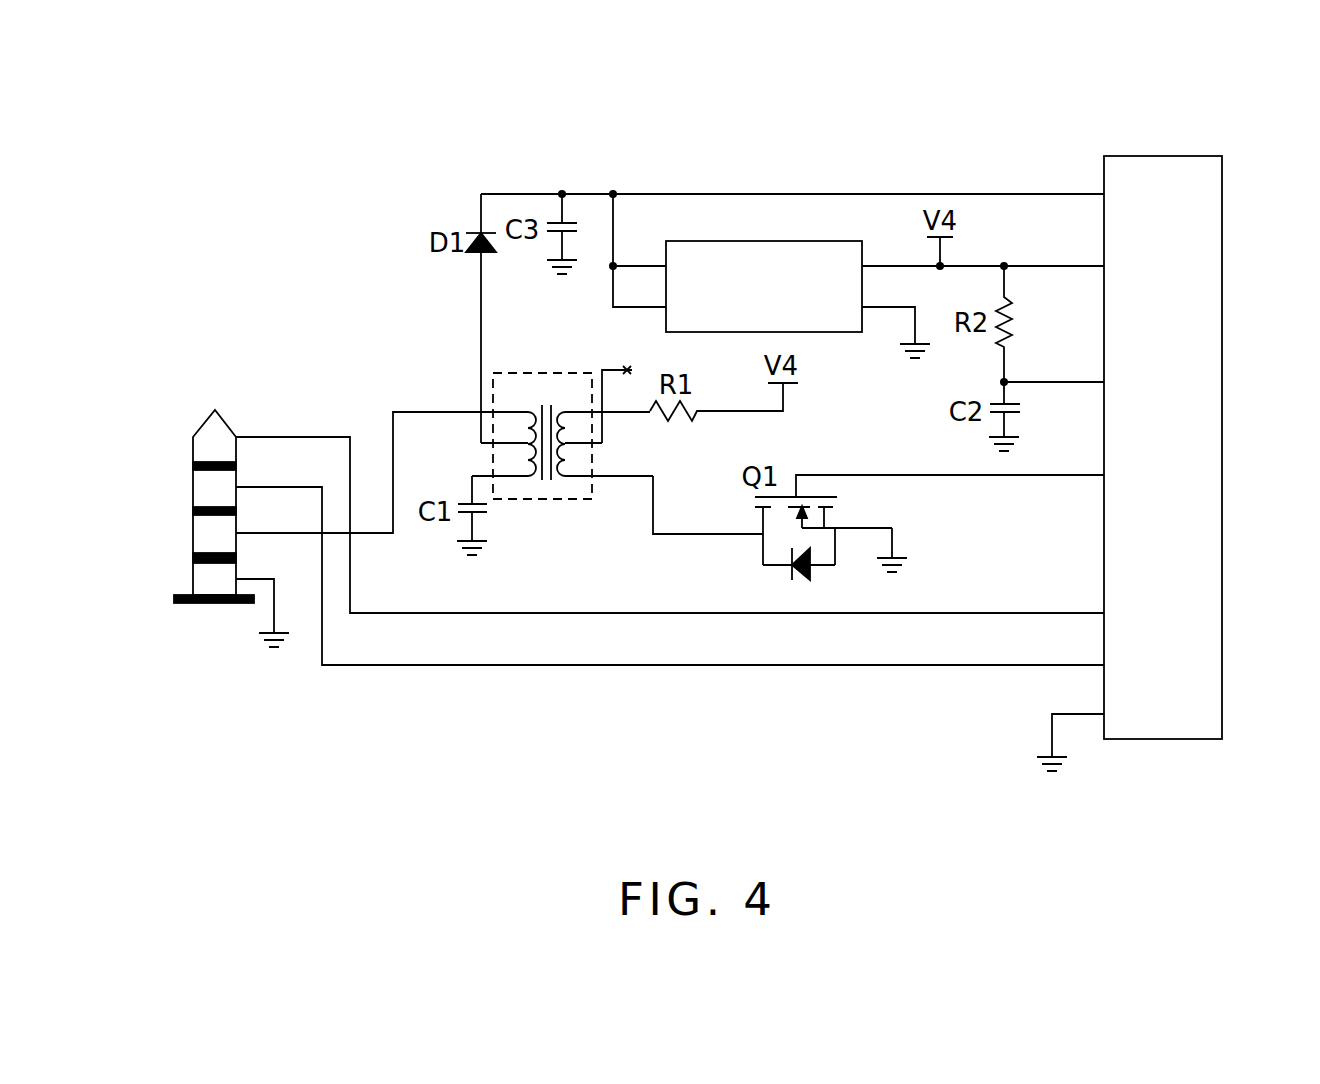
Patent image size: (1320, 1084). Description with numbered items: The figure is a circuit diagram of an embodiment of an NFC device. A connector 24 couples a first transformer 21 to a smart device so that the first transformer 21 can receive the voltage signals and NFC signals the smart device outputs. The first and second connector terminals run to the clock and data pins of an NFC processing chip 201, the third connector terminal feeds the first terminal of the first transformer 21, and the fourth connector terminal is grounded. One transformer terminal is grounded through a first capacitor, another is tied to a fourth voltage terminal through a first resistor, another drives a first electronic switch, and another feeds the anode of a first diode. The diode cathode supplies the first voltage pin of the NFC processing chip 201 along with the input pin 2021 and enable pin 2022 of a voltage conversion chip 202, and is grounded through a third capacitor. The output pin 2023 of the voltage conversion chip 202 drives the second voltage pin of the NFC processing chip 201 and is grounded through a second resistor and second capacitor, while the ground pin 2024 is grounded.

The connector 24 is at (213, 440).
The first transformer 21 is at (522, 499).
The voltage conversion chip 202 is at (764, 270).
The voltage conversion chip input pin 2021 is at (693, 267).
The voltage conversion chip enable pin 2022 is at (694, 307).
The voltage conversion chip output pin 2023 is at (833, 267).
The voltage conversion chip ground pin 2024 is at (833, 307).
The NFC processing chip 201 is at (1163, 156).